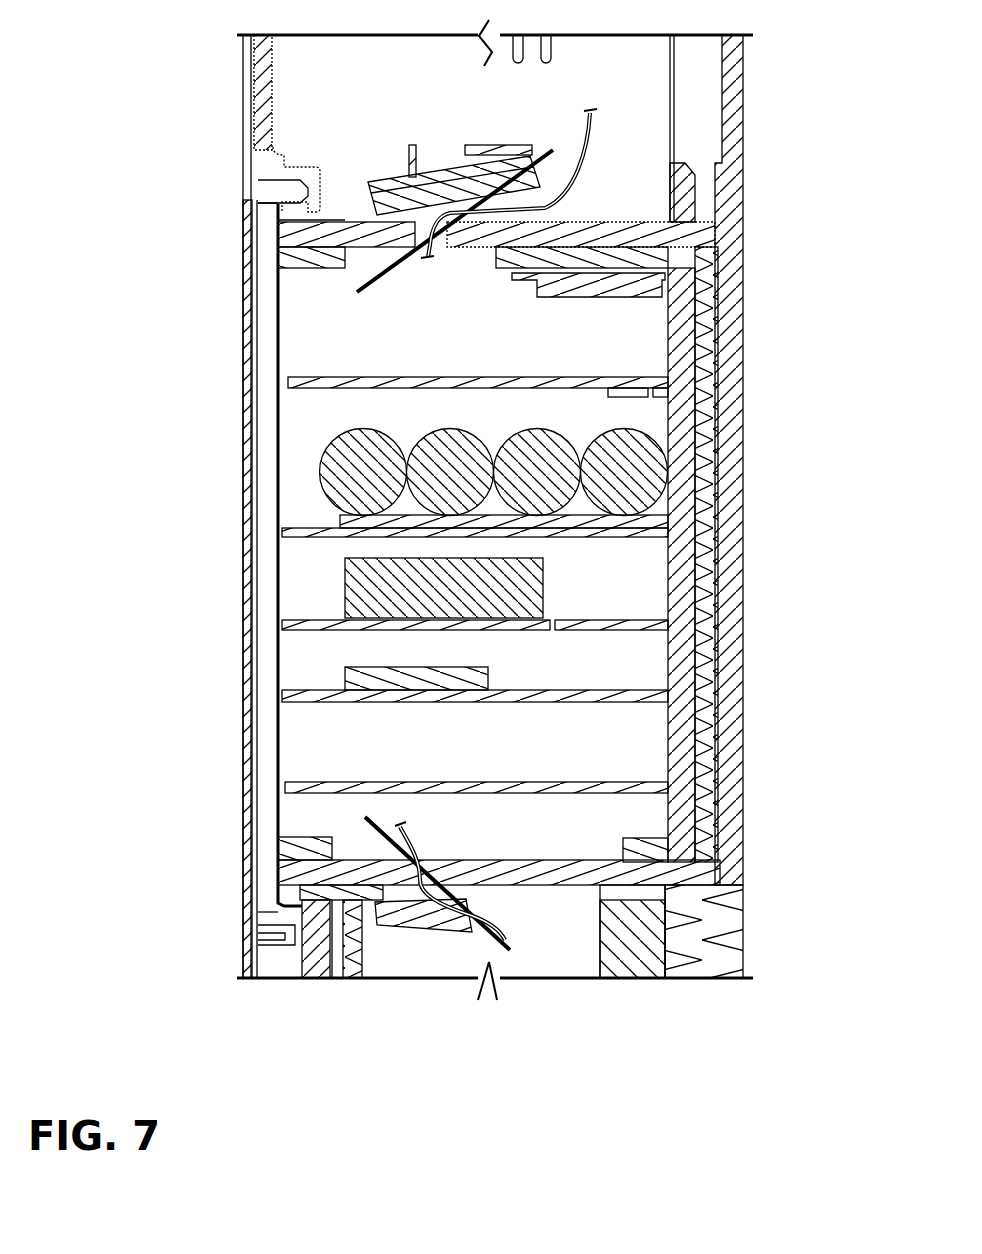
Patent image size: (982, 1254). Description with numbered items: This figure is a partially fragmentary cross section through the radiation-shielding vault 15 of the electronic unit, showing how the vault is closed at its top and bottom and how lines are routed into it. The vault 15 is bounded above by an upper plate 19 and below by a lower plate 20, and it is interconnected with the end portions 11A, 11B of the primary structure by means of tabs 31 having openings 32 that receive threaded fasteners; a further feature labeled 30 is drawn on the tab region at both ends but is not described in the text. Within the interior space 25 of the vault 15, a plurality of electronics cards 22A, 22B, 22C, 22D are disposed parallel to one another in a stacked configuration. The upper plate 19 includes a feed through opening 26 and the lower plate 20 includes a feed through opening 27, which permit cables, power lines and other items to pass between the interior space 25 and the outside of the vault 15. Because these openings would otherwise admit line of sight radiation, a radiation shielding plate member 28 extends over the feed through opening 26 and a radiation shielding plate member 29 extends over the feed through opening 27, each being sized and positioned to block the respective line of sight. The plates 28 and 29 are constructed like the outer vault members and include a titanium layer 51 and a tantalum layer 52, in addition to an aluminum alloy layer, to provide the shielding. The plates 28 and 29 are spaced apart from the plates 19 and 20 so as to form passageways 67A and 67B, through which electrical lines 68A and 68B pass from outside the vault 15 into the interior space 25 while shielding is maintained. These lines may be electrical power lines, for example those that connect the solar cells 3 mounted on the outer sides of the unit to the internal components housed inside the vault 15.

The solar cells 3 is at (242, 652).
The end portion 11A is at (745, 110).
The end portion 11B is at (745, 930).
The vault 15 is at (760, 452).
The upper plate 19 is at (653, 222).
The lower plate 20 is at (520, 862).
The electronics card 22A is at (490, 704).
The electronics card 22B is at (530, 632).
The electronics card 22C is at (555, 540).
The electronics card 22D is at (455, 392).
The interior space 25 is at (522, 346).
The feed through opening 26 is at (440, 248).
The feed through opening 27 is at (425, 862).
The radiation shielding plate member 28 is at (441, 170).
The radiation shielding plate member 29 is at (422, 925).
The bracket tongue 30 is at (270, 200).
The tab 31 is at (265, 163).
The opening 32 is at (262, 183).
The titanium layer 51 is at (378, 273).
The tantalum layer 52 is at (507, 945).
The passageway 67A is at (557, 220).
The passageway 67B is at (478, 975).
The electrical line 68A is at (583, 138).
The electrical line 68B is at (505, 915).